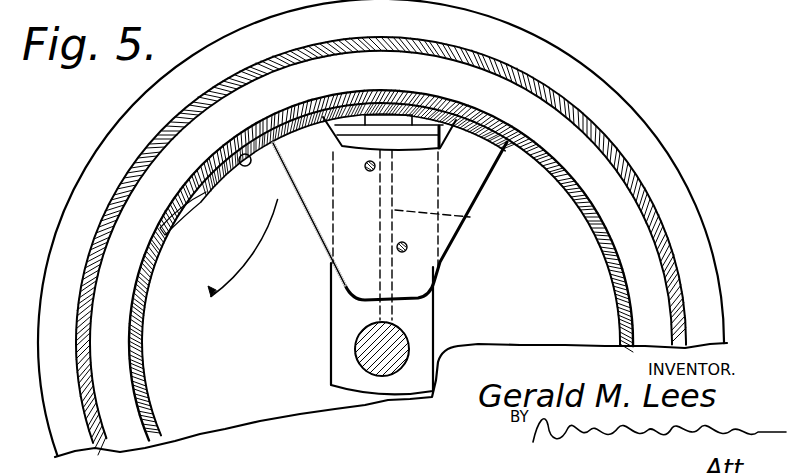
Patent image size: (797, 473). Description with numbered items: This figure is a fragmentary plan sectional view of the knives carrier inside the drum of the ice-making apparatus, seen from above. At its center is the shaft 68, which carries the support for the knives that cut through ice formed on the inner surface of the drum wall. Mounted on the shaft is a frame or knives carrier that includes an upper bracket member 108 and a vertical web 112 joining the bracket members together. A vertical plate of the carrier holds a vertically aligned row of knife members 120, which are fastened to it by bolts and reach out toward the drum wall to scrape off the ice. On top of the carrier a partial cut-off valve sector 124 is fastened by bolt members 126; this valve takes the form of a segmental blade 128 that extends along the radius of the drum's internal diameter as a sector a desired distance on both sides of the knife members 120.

The shaft 68 is at (373, 376).
The upper bracket member 108 is at (342, 303).
The vertical web 112 is at (468, 217).
The knife members 120 is at (388, 123).
The partial cut-off valve sector 124 is at (314, 208).
The bolt members 126 is at (375, 168).
The segmental blade 128 is at (246, 154).